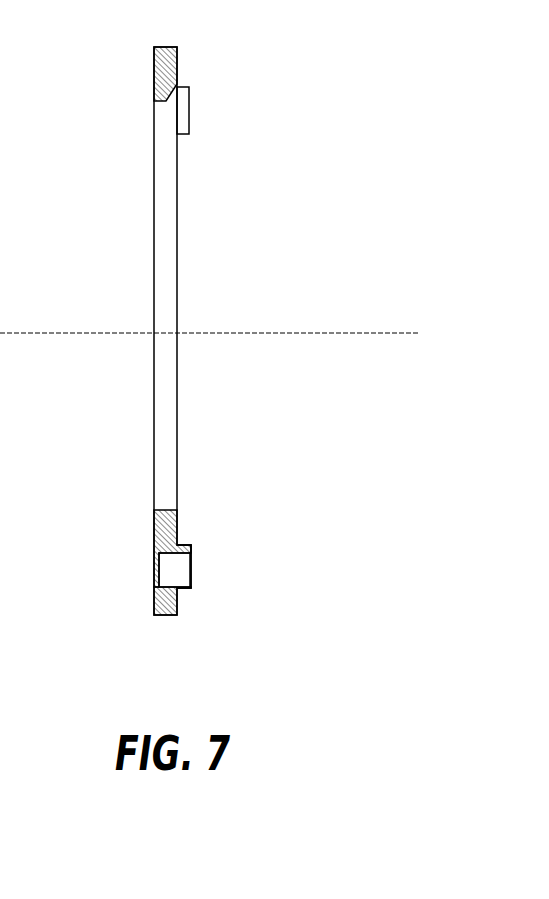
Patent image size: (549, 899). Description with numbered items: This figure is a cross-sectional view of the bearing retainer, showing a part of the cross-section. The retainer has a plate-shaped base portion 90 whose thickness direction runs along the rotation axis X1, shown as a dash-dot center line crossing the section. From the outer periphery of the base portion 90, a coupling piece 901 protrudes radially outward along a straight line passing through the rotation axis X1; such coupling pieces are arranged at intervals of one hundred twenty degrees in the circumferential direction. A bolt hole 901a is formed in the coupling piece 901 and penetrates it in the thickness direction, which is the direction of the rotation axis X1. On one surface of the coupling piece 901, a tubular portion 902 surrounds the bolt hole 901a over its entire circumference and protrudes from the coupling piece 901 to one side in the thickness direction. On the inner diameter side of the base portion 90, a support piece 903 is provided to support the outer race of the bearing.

The base portion 90 is at (157, 48).
The coupling piece 901 is at (153, 608).
The bolt hole 901a is at (152, 566).
The tubular portion 902 is at (190, 112).
The support piece 903 is at (155, 90).
The rotation axis X1 is at (236, 336).